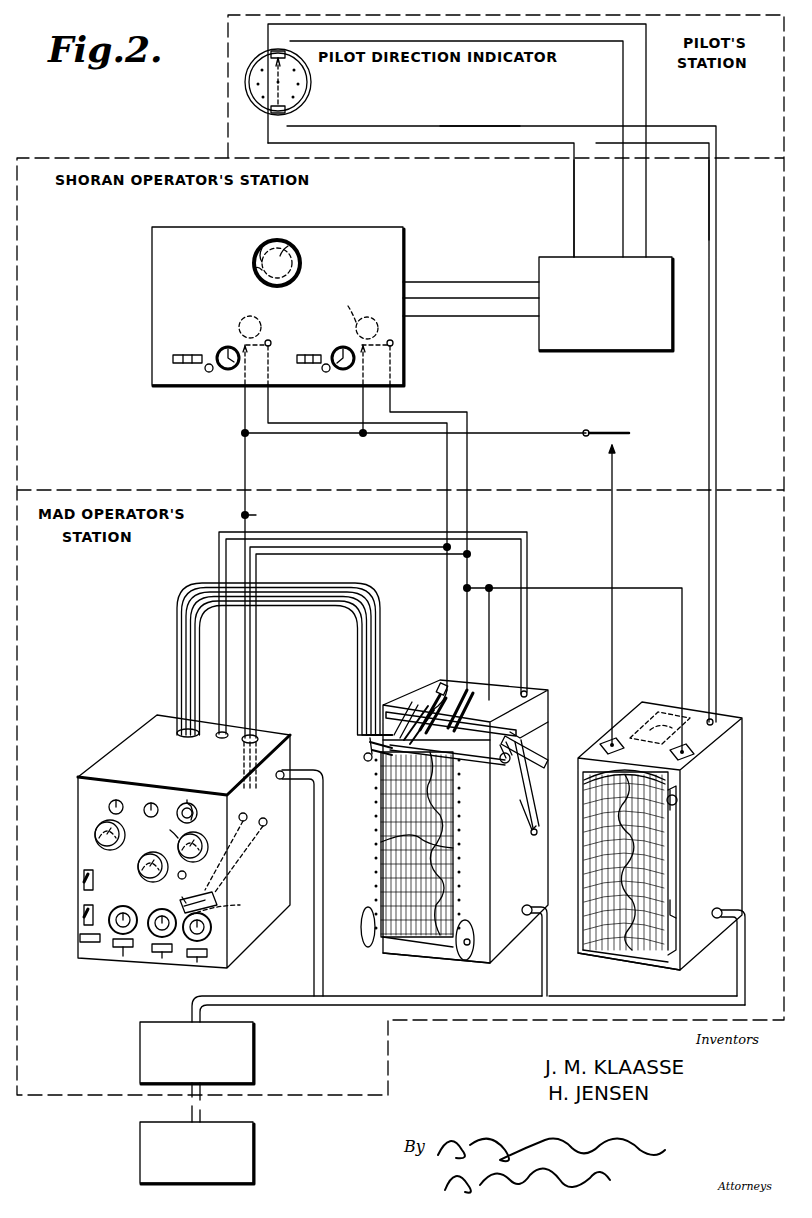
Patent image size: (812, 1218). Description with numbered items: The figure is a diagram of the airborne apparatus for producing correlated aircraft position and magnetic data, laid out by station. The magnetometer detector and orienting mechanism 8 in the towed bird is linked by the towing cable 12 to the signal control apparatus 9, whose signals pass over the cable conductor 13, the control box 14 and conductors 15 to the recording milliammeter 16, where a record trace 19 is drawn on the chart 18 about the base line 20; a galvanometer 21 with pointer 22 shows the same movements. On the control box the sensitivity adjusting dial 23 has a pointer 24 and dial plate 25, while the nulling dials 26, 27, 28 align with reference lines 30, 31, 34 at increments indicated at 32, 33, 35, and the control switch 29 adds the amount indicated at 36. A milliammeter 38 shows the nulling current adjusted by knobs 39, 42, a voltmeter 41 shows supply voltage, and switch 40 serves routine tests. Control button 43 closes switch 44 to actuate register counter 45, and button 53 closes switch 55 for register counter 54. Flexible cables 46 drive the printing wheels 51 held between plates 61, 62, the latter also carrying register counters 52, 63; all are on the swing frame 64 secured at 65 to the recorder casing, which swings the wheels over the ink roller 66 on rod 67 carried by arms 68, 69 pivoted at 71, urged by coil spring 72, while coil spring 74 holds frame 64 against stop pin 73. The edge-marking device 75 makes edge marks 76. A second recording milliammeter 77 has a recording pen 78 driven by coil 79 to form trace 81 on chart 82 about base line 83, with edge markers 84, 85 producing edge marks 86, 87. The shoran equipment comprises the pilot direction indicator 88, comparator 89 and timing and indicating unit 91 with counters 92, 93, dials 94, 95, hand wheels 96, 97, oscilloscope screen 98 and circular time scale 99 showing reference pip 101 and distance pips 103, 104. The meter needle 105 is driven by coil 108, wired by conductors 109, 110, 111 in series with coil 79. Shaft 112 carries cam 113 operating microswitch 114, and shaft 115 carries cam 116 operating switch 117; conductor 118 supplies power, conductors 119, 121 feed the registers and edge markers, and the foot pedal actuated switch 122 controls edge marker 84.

The magnetometer detector and orienting mechanism 8 is at (254, 1135).
The signal control apparatus 9 is at (254, 1066).
The towing cable 12 is at (201, 1103).
The cable conductor 13 is at (245, 996).
The control box 14 is at (257, 928).
The conductors 15 is at (360, 532).
The recording milliammeter 16 is at (548, 700).
The chart 18 is at (376, 830).
The record trace 19 is at (440, 850).
The base line 20 is at (381, 842).
The galvanometer 21 is at (166, 827).
The pointer 22 is at (179, 842).
The sensitivity adjusting dial 23 is at (180, 806).
The pointer 24 is at (195, 800).
The dial plate 25 is at (197, 812).
The dial 26 is at (200, 957).
The dial 27 is at (162, 952).
The dial 28 is at (123, 947).
The control switch 29 is at (84, 917).
The reference line 30 is at (205, 915).
The reference line 31 is at (157, 909).
The 50 gamma indication 32 is at (192, 962).
The 500 gamma indication 33 is at (166, 960).
The reference line 34 is at (125, 906).
The 5000 gamma indication 35 is at (126, 957).
The 2500 gamma indication 36 is at (90, 942).
The milliammeter 38 is at (138, 865).
The knob 39 is at (145, 803).
The switch 40 is at (84, 882).
The voltmeter 41 is at (99, 823).
The knob 42 is at (109, 800).
The control button 43 is at (200, 895).
The switch 44 is at (267, 822).
The register counter 45 is at (212, 896).
The flexible cables 46 is at (190, 678).
The printing wheels 51 is at (426, 706).
The electric register counter 52 is at (447, 660).
The button 53 is at (178, 878).
The register counter 54 is at (240, 905).
The switch 55 is at (247, 814).
The plate 61 is at (410, 702).
The plate 62 is at (438, 695).
The electric register counter 63 is at (470, 690).
The swing frame 64 is at (500, 724).
The securing point 65 is at (548, 722).
The ink roller 66 is at (376, 770).
The rod 67 is at (364, 757).
The arm 68 is at (370, 742).
The arm 69 is at (522, 820).
The pivot 71 is at (530, 836).
The coil spring 72 is at (512, 770).
The stop pin 73 is at (548, 760).
The coil spring 74 is at (536, 818).
The edge-marking device 75 is at (510, 760).
The edge-mark 76 is at (453, 823).
The recording milliammeter 77 is at (742, 828).
The recording pen 78 is at (668, 782).
The coil 79 is at (650, 726).
The trace 81 is at (660, 860).
The chart 82 is at (676, 820).
The base line 83 is at (630, 880).
The edge marker 84 is at (608, 740).
The edge marker 85 is at (694, 754).
The edge marks 86 is at (578, 840).
The edge marks 87 is at (676, 836).
The pilot direction indicator 88 is at (311, 82).
The comparator 89 is at (676, 345).
The timing and indicating unit 91 is at (152, 331).
The counter 92 is at (186, 355).
The counter 93 is at (310, 355).
The dial 94 is at (222, 348).
The dial 95 is at (338, 348).
The computer vernier hand wheel 96 is at (205, 368).
The computer vernier hand wheel 97 is at (322, 368).
The oscilloscope screen 98 is at (296, 268).
The circular time scale 99 is at (292, 270).
The reference pip 101 is at (262, 270).
The distance pip 103 is at (262, 248).
The rate pip 104 is at (288, 246).
The meter needle 105 is at (283, 100).
The coil 108 is at (285, 110).
The conductor 109 is at (487, 128).
The conductor 110 is at (668, 143).
The conductor 111 is at (548, 143).
The shaft 112 is at (341, 306).
The cam 113 is at (378, 315).
The microswitch 114 is at (393, 343).
The shaft 115 is at (258, 332).
The cam 116 is at (258, 320).
The switch 117 is at (271, 343).
The conductor 118 is at (245, 458).
The conductor 119 is at (400, 554).
The conductor 121 is at (350, 547).
The foot pedal actuated switch 122 is at (605, 445).